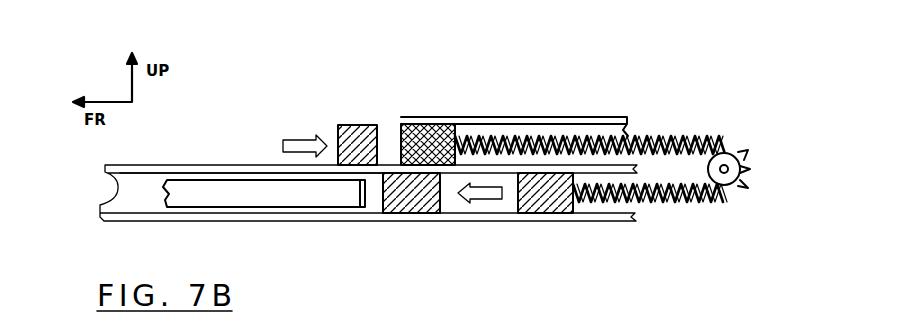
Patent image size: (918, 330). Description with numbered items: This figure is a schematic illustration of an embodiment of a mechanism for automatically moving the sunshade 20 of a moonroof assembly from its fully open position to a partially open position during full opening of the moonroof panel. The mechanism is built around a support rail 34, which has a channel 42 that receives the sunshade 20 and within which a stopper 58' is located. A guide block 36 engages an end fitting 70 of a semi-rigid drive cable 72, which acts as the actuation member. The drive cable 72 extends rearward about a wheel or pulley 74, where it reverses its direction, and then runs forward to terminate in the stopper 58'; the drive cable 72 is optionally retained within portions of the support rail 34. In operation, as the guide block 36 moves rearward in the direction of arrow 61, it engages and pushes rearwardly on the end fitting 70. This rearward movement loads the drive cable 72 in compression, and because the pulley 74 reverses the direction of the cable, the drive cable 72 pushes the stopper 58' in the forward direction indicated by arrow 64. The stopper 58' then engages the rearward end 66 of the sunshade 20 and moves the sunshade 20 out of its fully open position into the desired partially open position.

The sunshade 20 is at (208, 193).
The support rail 34 is at (135, 163).
The guide block 36 is at (358, 125).
The channel 42 is at (153, 183).
The stopper 58' is at (486, 225).
The arrow 61 is at (305, 138).
The arrow 64 is at (483, 199).
The rearward end 66 is at (358, 197).
The end fitting 70 is at (428, 140).
The drive cable 72 is at (552, 140).
The pulley 74 is at (706, 167).